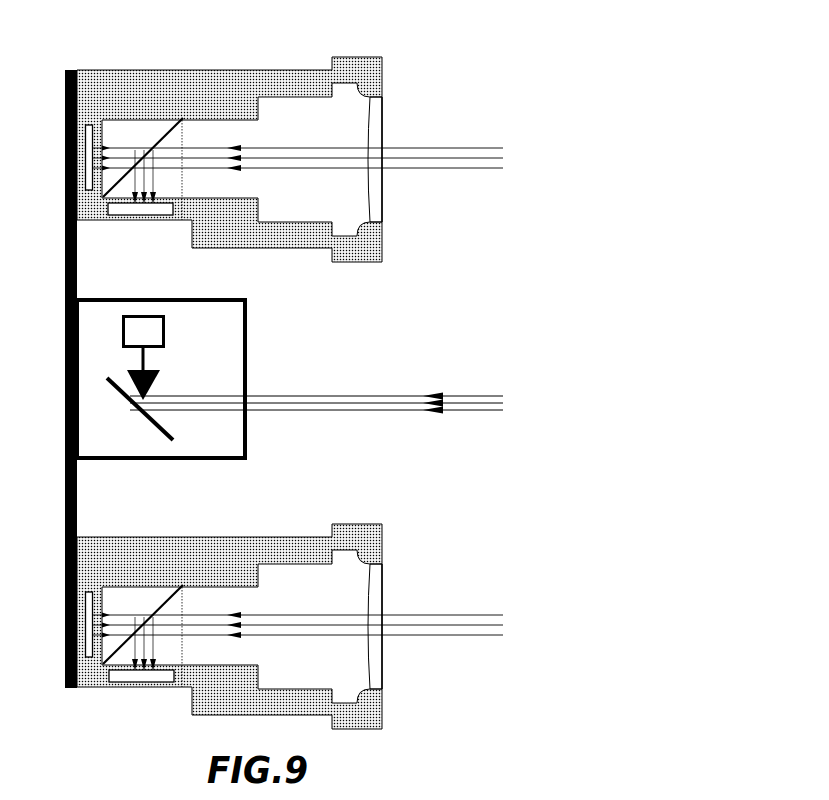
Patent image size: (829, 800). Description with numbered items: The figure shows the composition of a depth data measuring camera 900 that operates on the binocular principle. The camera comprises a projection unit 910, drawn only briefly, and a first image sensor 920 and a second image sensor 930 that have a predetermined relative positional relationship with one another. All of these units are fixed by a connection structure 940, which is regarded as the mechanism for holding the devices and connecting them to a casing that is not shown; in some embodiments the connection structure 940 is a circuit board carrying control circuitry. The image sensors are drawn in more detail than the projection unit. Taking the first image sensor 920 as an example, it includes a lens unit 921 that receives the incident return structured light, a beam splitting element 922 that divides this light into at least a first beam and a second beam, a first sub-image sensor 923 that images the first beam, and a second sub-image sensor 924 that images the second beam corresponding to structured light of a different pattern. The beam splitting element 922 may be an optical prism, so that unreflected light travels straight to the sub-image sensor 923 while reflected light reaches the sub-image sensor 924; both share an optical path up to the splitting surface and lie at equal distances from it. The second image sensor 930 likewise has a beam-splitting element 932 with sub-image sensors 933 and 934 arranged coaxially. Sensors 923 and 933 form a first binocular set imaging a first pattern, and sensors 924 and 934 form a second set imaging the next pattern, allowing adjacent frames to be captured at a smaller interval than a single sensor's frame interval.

The depth data measuring camera 900 is at (105, 20).
The projection unit 910 is at (242, 352).
The first image sensor 920 is at (261, 161).
The lens unit 921 is at (385, 198).
The beam splitting element 922 is at (163, 137).
The first sub-image sensor 923 is at (86, 147).
The second sub-image sensor 924 is at (144, 216).
The second image sensor 930 is at (260, 627).
The beam-splitting element 932 is at (163, 604).
The sub-image sensor 933 is at (86, 614).
The sub-image sensor 934 is at (158, 683).
The connection structure 940 is at (65, 257).